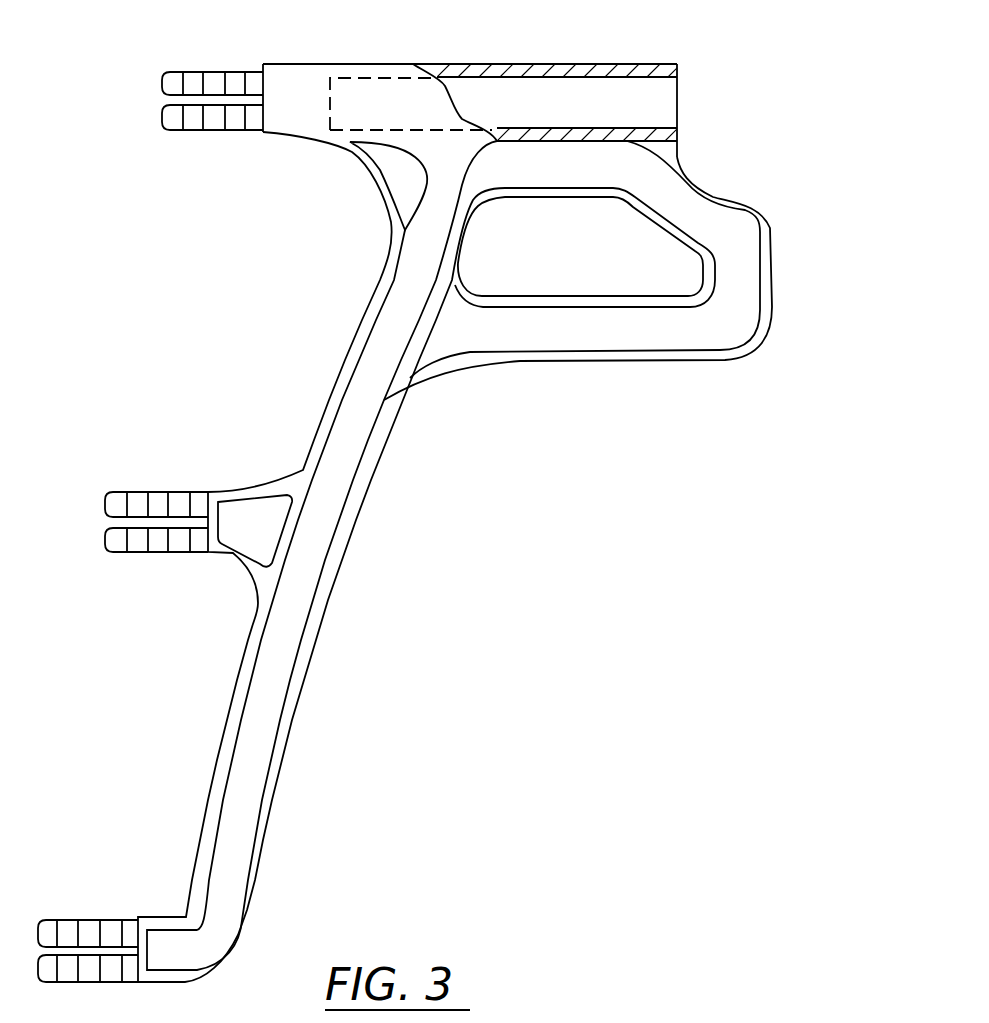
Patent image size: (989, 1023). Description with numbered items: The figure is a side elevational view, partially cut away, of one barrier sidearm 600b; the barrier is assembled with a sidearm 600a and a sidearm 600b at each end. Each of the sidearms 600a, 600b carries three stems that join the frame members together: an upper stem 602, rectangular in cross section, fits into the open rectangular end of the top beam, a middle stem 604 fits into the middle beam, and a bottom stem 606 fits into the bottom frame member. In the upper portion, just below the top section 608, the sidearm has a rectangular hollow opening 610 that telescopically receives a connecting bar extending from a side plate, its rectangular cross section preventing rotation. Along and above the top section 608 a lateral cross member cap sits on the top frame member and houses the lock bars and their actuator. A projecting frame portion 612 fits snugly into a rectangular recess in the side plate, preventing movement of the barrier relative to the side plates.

The barrier sidearm 600a is at (426, 523).
The barrier sidearm 600b is at (362, 527).
The stem 602 is at (217, 132).
The stem 604 is at (160, 553).
The bottom stem 606 is at (110, 920).
The top section 608 is at (608, 68).
The rectangular hollow opening 610 is at (650, 78).
The projecting frame portion 612 is at (733, 278).